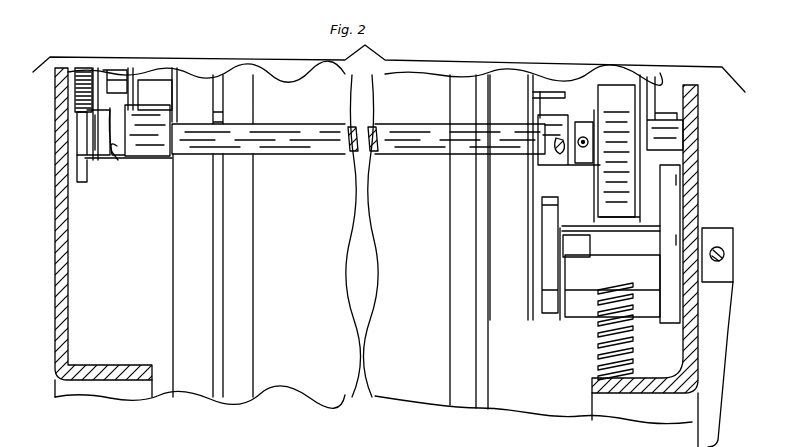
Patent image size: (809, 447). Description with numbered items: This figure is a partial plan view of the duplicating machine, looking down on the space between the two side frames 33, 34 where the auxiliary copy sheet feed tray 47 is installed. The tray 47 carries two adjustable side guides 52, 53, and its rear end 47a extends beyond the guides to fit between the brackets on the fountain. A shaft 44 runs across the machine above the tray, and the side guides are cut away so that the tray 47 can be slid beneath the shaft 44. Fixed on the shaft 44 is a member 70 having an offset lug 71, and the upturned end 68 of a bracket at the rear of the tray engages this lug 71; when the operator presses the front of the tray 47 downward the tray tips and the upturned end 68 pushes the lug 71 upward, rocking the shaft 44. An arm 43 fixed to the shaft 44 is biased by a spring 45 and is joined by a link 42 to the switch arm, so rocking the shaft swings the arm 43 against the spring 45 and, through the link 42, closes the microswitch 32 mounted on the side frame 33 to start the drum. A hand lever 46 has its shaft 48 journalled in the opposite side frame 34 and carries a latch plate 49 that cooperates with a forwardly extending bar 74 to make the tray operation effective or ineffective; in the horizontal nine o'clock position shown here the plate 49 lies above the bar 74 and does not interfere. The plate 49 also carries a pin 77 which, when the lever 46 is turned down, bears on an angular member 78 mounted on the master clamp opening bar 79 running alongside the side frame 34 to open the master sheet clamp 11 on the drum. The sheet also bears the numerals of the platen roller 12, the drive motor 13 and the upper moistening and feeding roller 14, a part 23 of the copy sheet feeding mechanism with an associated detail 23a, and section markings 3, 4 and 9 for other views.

The upper combined moistening and feeding roller 14 is at (128, 40).
The section line 4- 4 is at (240, 40).
The platen roller 12 is at (420, 45).
The section line 3- 3 is at (473, 46).
The drive motor 13 is at (680, 35).
The master sheet clamp means 11 is at (655, 50).
The section line 9- 9 is at (525, 170).
The microswitch 32 is at (113, 78).
The spring 45 is at (78, 84).
The link 42 is at (78, 109).
The arm 43 is at (85, 181).
The pivot pin 23a is at (118, 148).
The copy sheet feeding mechanism part 23 is at (627, 142).
The member 70 is at (177, 154).
The offset lug 71 is at (162, 101).
The upturned end 68 is at (176, 92).
The shaft 44 is at (302, 146).
The auxiliary copy sheet feed tray 47 is at (288, 322).
The rear end of tray 47a is at (388, 77).
The adjustable side guide 53 is at (222, 262).
The side frame 33 is at (58, 282).
The side frame 34 is at (638, 408).
The adjustable side guide 52 is at (482, 323).
The forwardly extending bar 74 is at (550, 184).
The pin 77 is at (572, 250).
The shaft of hand lever 48 is at (538, 255).
The latch plate 49 is at (545, 286).
The angular member 78 is at (654, 323).
The master clamp opening bar 79 is at (672, 183).
The hand lever 46 is at (720, 381).